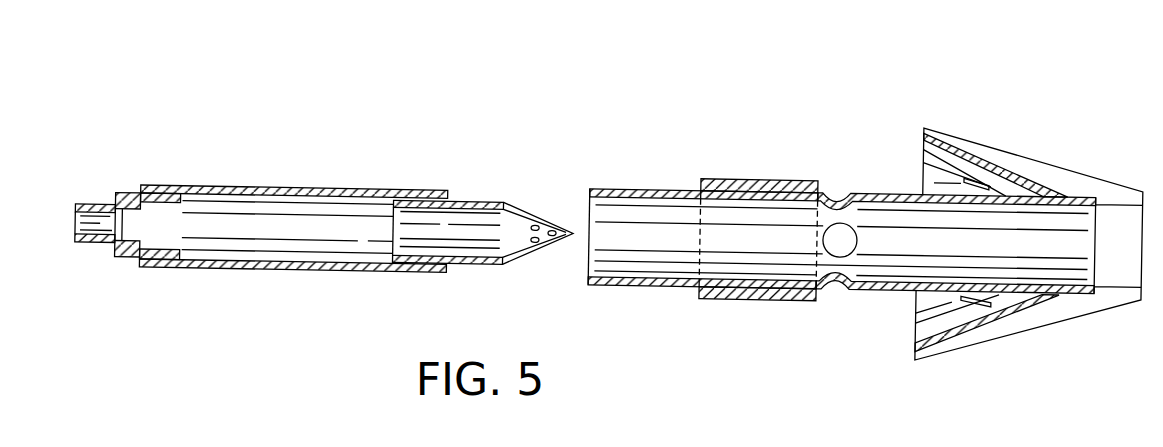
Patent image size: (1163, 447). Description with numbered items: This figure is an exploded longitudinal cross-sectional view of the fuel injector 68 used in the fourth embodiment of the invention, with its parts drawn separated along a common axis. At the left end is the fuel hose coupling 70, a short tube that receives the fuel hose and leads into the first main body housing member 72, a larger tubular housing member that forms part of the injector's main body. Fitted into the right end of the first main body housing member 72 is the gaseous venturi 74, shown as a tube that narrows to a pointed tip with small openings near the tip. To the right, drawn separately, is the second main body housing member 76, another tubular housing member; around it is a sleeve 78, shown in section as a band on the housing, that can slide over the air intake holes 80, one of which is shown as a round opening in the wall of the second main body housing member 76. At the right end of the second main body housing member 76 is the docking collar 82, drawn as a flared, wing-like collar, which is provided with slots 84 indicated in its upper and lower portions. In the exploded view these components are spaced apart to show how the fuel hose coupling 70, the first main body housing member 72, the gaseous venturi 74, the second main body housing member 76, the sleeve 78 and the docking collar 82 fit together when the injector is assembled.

The needle assembly 68 is at (564, 137).
The fuel hose coupling 70 is at (82, 244).
The first main body housing member 72 is at (263, 272).
The gaseous venturi 74 is at (472, 267).
The second main body housing member 76 is at (632, 287).
The sleeve 78 is at (758, 300).
The air intake holes 80 is at (845, 211).
The docking collar 82 is at (1057, 168).
The slots 84 is at (992, 185).